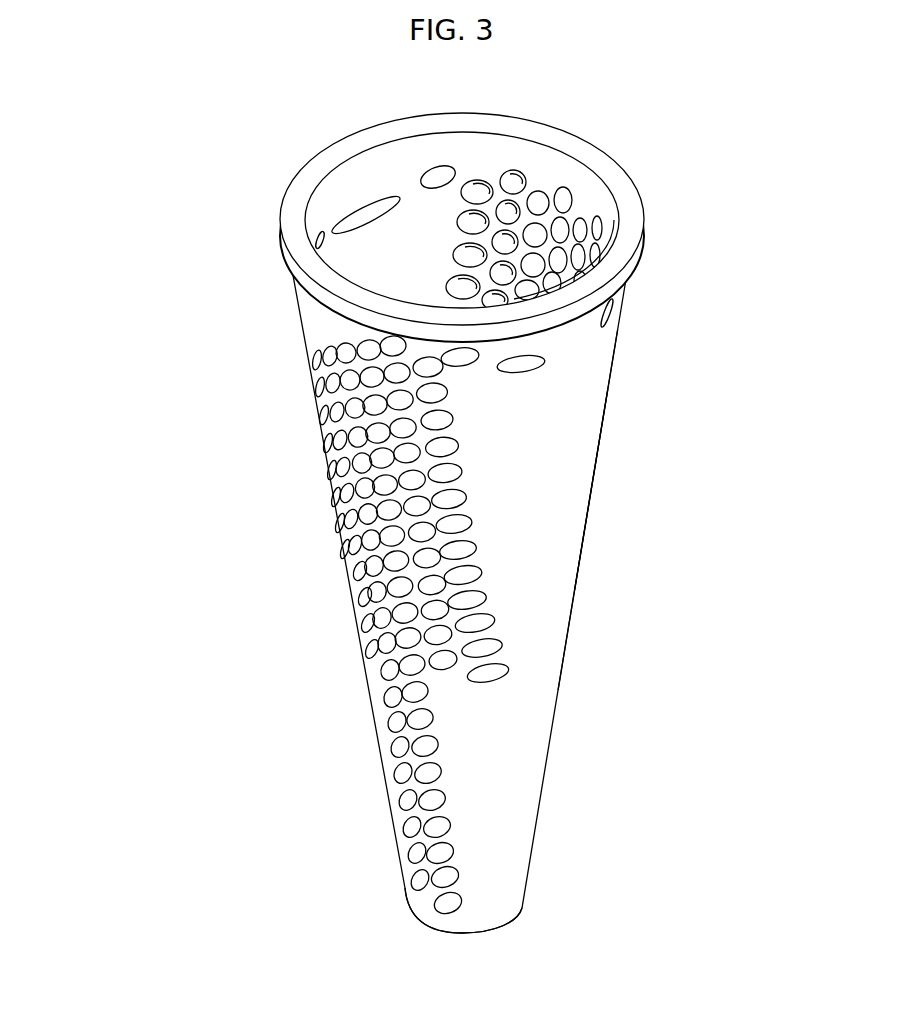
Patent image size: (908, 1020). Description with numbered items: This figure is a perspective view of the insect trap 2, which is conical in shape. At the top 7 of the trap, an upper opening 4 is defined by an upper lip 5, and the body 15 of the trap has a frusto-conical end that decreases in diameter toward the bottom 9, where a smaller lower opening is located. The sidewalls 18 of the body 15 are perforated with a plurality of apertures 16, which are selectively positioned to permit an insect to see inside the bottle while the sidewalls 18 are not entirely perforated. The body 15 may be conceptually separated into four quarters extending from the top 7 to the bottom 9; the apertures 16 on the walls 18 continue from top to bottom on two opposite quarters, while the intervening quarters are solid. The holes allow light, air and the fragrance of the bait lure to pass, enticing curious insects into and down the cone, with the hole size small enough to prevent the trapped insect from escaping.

The insect trap 2 is at (41, 162).
The upper opening 4 is at (393, 243).
The upper lip 5 is at (528, 123).
The top 7 is at (607, 285).
The bottom 9 is at (488, 913).
The body 15 is at (520, 436).
The apertures 16 is at (467, 541).
The sidewalls 18 is at (607, 370).